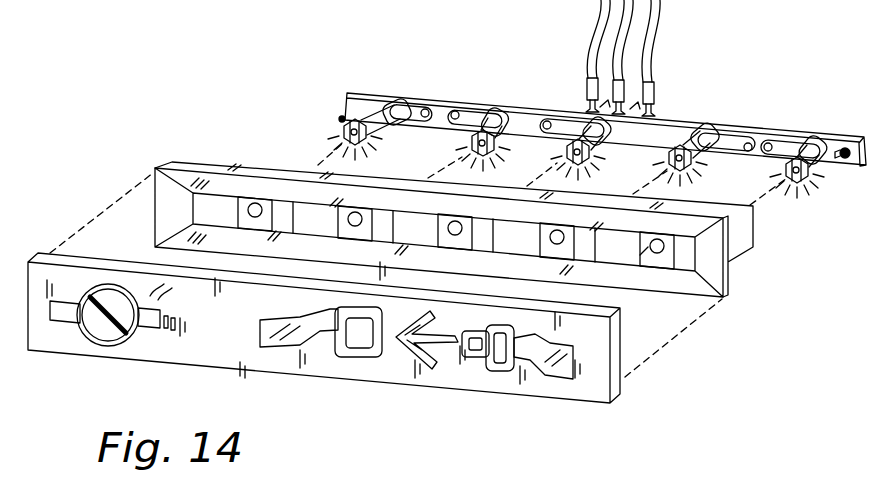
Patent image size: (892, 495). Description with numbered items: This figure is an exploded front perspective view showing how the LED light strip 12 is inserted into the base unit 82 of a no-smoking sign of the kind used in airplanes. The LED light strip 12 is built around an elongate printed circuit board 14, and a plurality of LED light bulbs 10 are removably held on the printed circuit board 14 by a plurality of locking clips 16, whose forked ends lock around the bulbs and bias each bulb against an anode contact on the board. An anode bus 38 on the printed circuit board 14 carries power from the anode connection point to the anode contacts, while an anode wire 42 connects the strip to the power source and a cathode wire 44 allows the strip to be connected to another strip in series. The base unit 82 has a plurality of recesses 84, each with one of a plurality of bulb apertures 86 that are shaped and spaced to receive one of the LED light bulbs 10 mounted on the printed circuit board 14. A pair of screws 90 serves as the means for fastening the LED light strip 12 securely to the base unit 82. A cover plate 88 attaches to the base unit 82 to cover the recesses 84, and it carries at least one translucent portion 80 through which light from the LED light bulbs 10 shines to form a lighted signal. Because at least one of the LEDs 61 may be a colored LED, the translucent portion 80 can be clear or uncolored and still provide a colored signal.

The LED light bulb 10 is at (806, 138).
The LED light strip 12 is at (845, 118).
The printed circuit board 14 is at (405, 96).
The locking clip 16 is at (481, 119).
The anode bus 38 is at (734, 329).
The anode wire 42 is at (666, 54).
The cathode wire 44 is at (598, 55).
The LED 61 is at (792, 186).
The translucent portion 80 is at (98, 323).
The base unit 82 is at (748, 269).
The recess 84 is at (218, 206).
The bulb aperture 86 is at (267, 205).
The cover plate 88 is at (598, 401).
The screw 90 is at (343, 115).